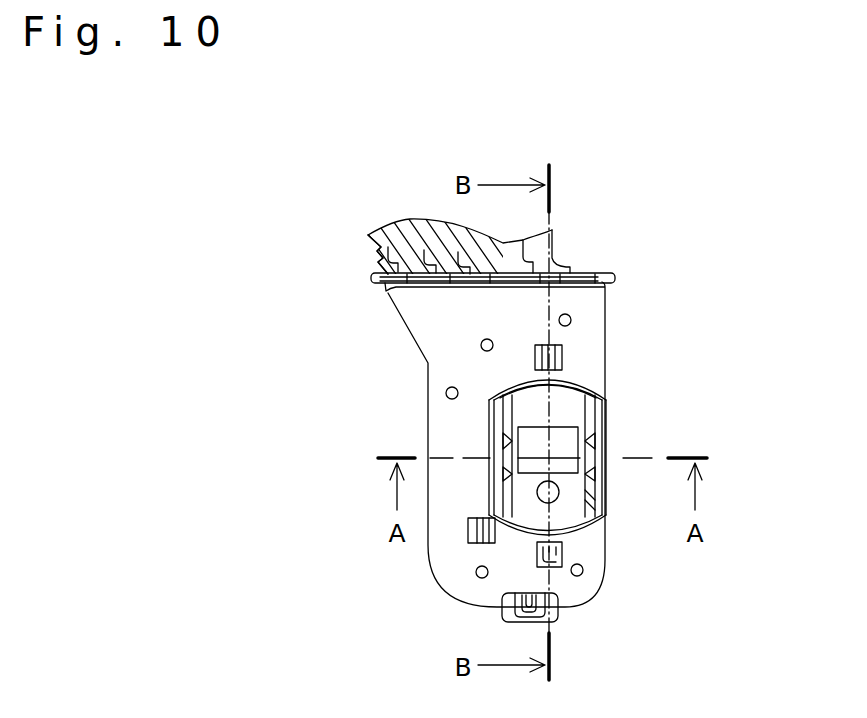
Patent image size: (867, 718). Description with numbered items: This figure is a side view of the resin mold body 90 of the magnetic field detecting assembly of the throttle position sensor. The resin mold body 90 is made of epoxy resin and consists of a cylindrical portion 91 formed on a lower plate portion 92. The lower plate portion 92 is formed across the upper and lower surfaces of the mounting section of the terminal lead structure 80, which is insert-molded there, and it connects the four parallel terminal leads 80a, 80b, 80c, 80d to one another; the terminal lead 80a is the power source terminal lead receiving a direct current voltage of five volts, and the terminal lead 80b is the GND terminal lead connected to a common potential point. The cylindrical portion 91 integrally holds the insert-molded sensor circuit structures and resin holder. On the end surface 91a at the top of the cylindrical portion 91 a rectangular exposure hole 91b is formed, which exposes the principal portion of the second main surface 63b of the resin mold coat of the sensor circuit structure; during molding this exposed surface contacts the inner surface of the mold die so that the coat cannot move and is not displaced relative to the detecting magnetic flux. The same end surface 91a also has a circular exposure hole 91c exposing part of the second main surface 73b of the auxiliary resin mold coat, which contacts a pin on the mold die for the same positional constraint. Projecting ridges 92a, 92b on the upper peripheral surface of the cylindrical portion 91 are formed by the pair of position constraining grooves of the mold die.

The terminal lead structure 80 is at (448, 205).
The power source terminal lead 80a is at (413, 231).
The GND terminal lead 80b is at (468, 241).
The terminal lead 80c is at (540, 241).
The terminal lead 80d is at (387, 243).
The resin mold body 90 is at (592, 337).
The cylindrical portion 91 is at (559, 480).
The end surface 91a is at (567, 393).
The rectangular exposure hole 91b is at (590, 447).
The circular exposure hole 91c is at (557, 488).
The lower plate portion 92 is at (575, 596).
The projecting ridge 92a is at (502, 442).
The projecting ridge 92b is at (590, 456).
The second main surface 63b is at (560, 437).
The second main surface 73b is at (592, 510).